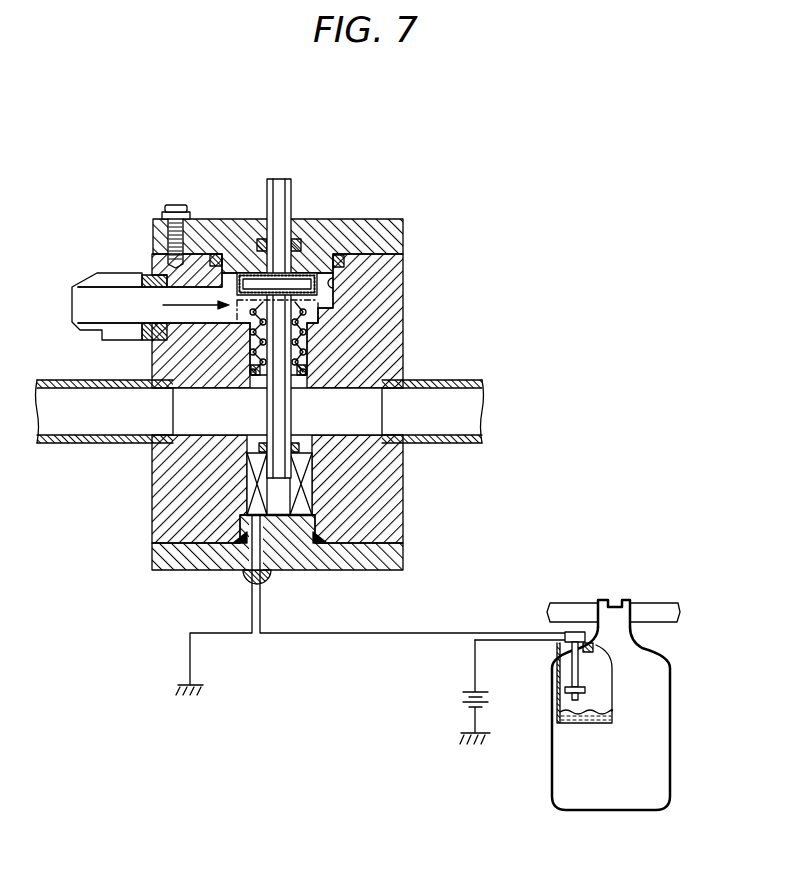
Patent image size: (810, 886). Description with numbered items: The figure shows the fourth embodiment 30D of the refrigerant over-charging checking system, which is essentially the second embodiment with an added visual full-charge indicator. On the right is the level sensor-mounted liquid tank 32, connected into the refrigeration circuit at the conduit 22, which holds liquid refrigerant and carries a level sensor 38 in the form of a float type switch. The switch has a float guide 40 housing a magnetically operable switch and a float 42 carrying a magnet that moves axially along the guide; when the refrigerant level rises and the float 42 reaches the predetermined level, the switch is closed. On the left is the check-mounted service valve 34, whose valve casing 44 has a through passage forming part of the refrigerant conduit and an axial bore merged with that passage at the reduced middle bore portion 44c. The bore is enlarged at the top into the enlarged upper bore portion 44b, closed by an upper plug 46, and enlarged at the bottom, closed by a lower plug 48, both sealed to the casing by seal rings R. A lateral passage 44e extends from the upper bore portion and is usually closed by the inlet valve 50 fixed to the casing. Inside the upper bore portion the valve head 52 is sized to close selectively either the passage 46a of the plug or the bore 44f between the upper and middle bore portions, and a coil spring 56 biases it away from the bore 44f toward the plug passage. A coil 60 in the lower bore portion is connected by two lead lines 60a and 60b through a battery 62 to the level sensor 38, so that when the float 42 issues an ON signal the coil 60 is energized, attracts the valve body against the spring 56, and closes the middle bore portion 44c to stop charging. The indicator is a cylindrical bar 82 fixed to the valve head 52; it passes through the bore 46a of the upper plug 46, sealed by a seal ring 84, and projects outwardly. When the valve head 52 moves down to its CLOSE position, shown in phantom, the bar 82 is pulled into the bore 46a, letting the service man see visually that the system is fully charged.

The check-mounted service valve 34 is at (285, 357).
The upper plug 46 is at (303, 212).
The passage (bore) of the upper plug 46a is at (283, 213).
The seal ring 84 is at (300, 249).
The cylindrical bar 82 is at (281, 181).
The valve casing 44 is at (180, 363).
The enlarged upper bore portion 44b is at (340, 283).
The reduced middle bore portion 44c is at (291, 410).
The lateral passage 44e is at (178, 322).
The bore 44f is at (307, 351).
The inlet valve 50 is at (112, 273).
The valve head 52 is at (320, 292).
The coil spring 56 is at (262, 383).
The lower plug 48 is at (385, 560).
The seal ring R is at (322, 535).
The coil 60 is at (312, 488).
The lead line 60a is at (326, 632).
The lead line 60b is at (222, 632).
The battery 62 is at (460, 700).
The fourth embodiment 30D is at (637, 638).
The conduit 22 is at (652, 611).
The level sensor-mounted liquid tank 32 is at (679, 674).
The level sensor 38 is at (573, 630).
The float guide 40 is at (578, 669).
The float 42 is at (584, 695).